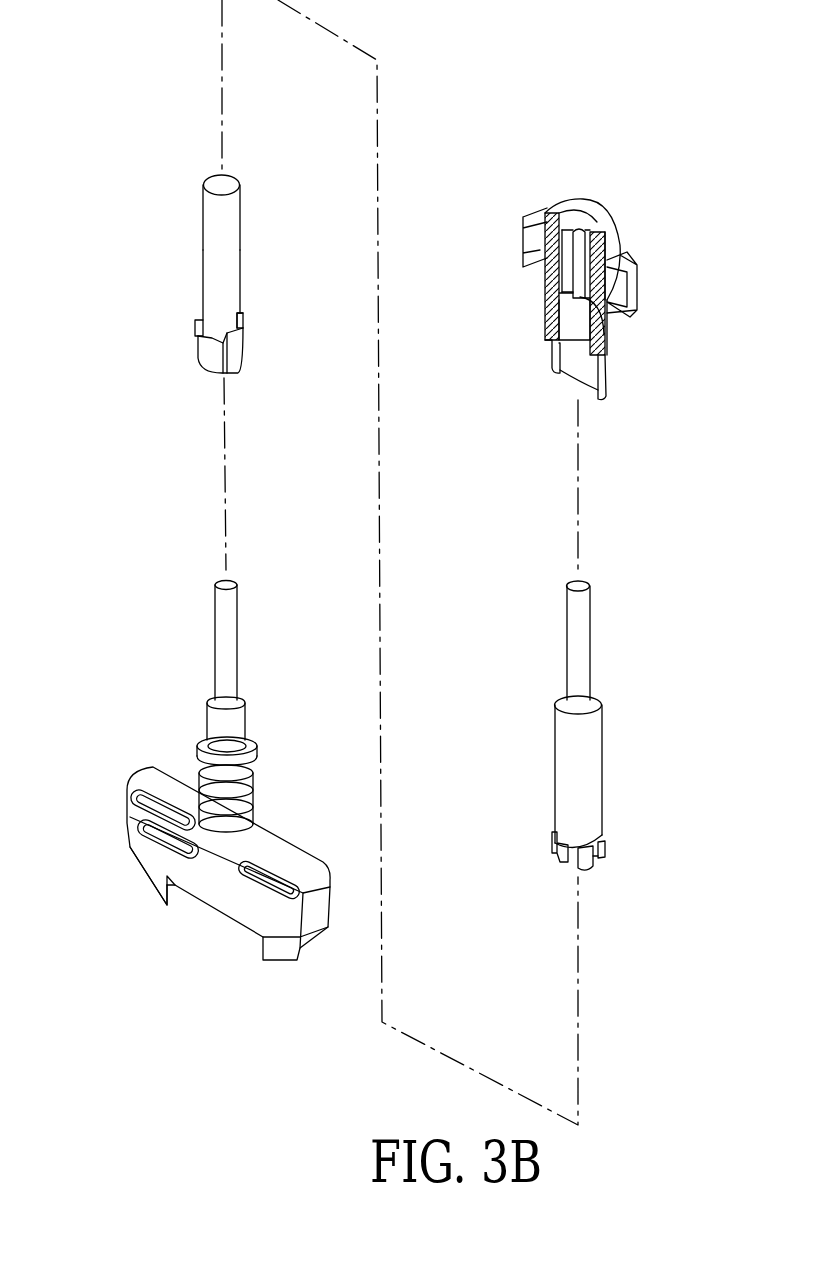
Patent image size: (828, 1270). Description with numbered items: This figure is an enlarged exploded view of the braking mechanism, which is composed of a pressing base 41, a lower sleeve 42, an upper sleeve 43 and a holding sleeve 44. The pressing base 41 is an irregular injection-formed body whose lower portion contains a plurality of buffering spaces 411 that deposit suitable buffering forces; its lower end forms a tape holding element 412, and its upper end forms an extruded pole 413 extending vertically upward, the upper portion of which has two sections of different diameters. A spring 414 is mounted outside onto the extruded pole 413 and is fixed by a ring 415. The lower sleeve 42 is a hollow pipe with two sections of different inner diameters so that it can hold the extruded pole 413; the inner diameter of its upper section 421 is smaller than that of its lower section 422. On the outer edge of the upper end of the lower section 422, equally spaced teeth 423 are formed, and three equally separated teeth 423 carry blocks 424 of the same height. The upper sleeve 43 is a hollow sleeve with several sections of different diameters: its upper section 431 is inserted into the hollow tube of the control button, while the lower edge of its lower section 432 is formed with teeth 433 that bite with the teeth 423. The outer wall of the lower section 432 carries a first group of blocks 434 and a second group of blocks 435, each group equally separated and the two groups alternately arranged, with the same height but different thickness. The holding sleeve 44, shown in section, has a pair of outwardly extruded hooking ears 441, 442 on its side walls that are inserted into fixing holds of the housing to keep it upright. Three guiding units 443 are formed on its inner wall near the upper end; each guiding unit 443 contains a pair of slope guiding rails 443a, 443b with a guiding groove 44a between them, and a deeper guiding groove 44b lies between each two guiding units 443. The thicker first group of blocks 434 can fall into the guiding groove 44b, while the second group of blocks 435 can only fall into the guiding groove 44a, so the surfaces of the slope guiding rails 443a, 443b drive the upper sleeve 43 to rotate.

The pressing base 41 is at (197, 760).
The buffering spaces 411 is at (172, 837).
The tape holding element 412 is at (150, 888).
The extruded pole 413 is at (222, 632).
The spring 414 is at (253, 788).
The ring 415 is at (248, 747).
The lower sleeve 42 is at (218, 295).
The upper section 421 is at (215, 207).
The lower section 422 is at (220, 343).
The teeth 423 is at (237, 327).
The blocks 424 is at (233, 368).
The upper sleeve 43 is at (571, 739).
The upper section 431 is at (578, 653).
The lower section 432 is at (575, 832).
The teeth 433 is at (577, 862).
The first group of blocks 434 is at (603, 843).
The second group of blocks 435 is at (593, 860).
The holding sleeve 44 is at (562, 238).
The guiding groove 44a is at (568, 227).
The guiding groove 44b is at (593, 227).
The hooking ear 441 is at (533, 208).
The hooking ear 442 is at (628, 260).
The guiding unit 443 is at (603, 312).
The slope guiding rail 443a is at (570, 257).
The slope guiding rail 443b is at (582, 228).